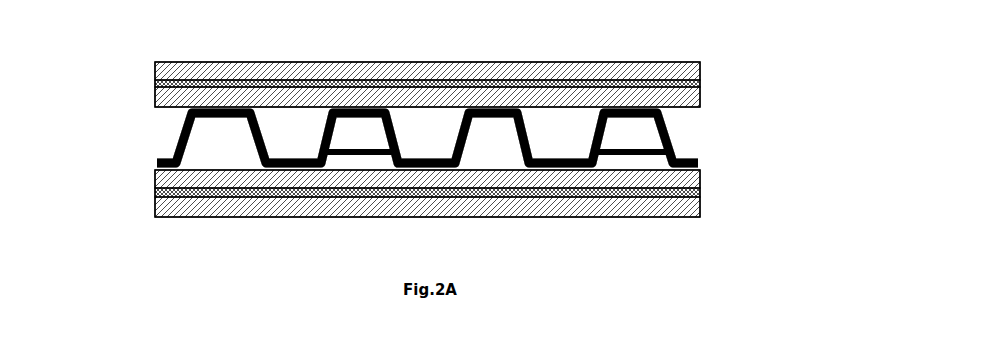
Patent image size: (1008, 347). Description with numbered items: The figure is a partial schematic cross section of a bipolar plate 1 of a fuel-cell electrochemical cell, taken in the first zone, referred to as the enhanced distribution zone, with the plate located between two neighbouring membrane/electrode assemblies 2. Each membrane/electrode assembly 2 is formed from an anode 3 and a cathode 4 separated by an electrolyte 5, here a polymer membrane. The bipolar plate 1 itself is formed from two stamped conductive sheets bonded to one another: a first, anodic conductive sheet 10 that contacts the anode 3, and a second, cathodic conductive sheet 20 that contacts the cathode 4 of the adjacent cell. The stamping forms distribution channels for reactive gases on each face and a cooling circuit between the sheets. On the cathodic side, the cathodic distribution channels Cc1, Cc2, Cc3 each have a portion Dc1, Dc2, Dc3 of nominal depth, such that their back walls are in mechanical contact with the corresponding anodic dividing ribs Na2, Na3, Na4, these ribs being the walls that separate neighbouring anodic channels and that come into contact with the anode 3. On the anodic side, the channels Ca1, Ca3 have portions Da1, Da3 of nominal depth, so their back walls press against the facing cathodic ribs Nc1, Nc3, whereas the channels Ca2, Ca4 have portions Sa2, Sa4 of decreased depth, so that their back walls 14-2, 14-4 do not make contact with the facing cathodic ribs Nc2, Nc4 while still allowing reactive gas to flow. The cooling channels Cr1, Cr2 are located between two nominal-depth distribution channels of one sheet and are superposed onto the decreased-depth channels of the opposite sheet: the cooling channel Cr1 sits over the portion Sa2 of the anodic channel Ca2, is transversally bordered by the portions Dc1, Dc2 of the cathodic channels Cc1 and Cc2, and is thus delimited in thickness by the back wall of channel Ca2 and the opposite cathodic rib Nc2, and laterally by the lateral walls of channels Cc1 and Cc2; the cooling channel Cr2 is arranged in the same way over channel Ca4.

The bipolar plate 1 is at (756, 139).
The membrane/electrode assembly 2 is at (82, 38).
The anode 3 is at (155, 68).
The cathode 4 is at (155, 96).
The electrolyte 5 is at (155, 83).
The first conductive sheet 10 is at (702, 168).
The second conductive sheet 20 is at (676, 136).
The back wall 14-2 is at (378, 153).
The back wall 14-4 is at (657, 153).
The cathodic dividing rib Nc1 is at (225, 107).
The cathodic dividing rib Nc2 is at (358, 107).
The cathodic dividing rib Nc3 is at (493, 107).
The cathodic dividing rib Nc4 is at (630, 107).
The portion of nominal depth Dc1 is at (313, 117).
The portion of nominal depth Dc2 is at (455, 117).
The portion of nominal depth Dc3 is at (585, 117).
The cathodic distribution channel Cc1 is at (295, 135).
The cathodic distribution channel Cc2 is at (427, 135).
The cathodic distribution channel Cc3 is at (560, 135).
The cooling channel Cr1 is at (360, 133).
The cooling channel Cr2 is at (633, 133).
The anodic distribution channel Ca1 is at (220, 163).
The anodic distribution channel Ca2 is at (359, 162).
The anodic distribution channel Ca3 is at (495, 163).
The anodic distribution channel Ca4 is at (632, 162).
The portion of nominal depth Da1 is at (197, 164).
The portion of nominal depth Da3 is at (471, 164).
The anodic dividing rib Na2 is at (286, 172).
The anodic dividing rib Na3 is at (411, 202).
The anodic dividing rib Na4 is at (563, 172).
The portion of decreased depth Sa2 is at (338, 164).
The portion of decreased depth Sa4 is at (612, 164).